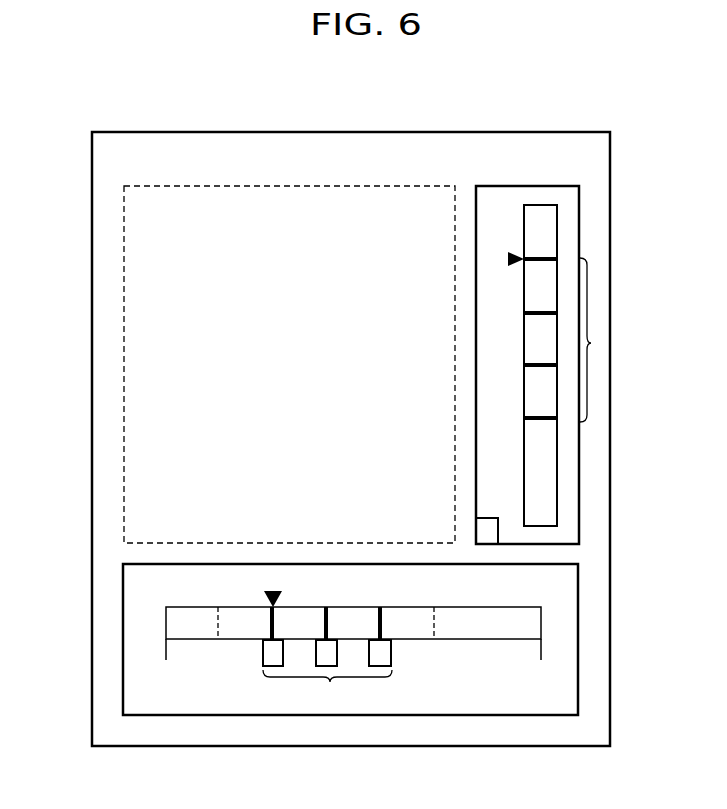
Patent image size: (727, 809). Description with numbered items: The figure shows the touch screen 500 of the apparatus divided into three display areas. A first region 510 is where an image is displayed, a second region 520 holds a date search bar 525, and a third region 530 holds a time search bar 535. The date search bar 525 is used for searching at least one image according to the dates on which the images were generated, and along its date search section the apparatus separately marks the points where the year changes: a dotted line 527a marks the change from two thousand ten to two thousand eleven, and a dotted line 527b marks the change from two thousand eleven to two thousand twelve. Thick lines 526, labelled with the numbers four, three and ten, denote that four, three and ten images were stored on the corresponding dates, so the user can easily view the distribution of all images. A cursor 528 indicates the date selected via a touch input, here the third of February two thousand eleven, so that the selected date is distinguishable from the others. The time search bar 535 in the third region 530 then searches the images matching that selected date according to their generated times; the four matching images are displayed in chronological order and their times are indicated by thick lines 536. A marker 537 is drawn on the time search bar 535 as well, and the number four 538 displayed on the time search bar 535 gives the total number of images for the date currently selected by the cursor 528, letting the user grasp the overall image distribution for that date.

The touch screen 500 is at (355, 132).
The first region 510 is at (124, 384).
The second region 520 is at (123, 620).
The date search bar 525 is at (541, 625).
The thick lines 526 is at (327, 658).
The dotted line 527a is at (218, 641).
The dotted line 527b is at (434, 641).
The cursor 528 is at (284, 596).
The third region 530 is at (580, 226).
The time search bar 535 is at (557, 477).
The thick lines 536 is at (591, 343).
The position indicator 537 is at (508, 259).
The number "4" 538 is at (476, 532).